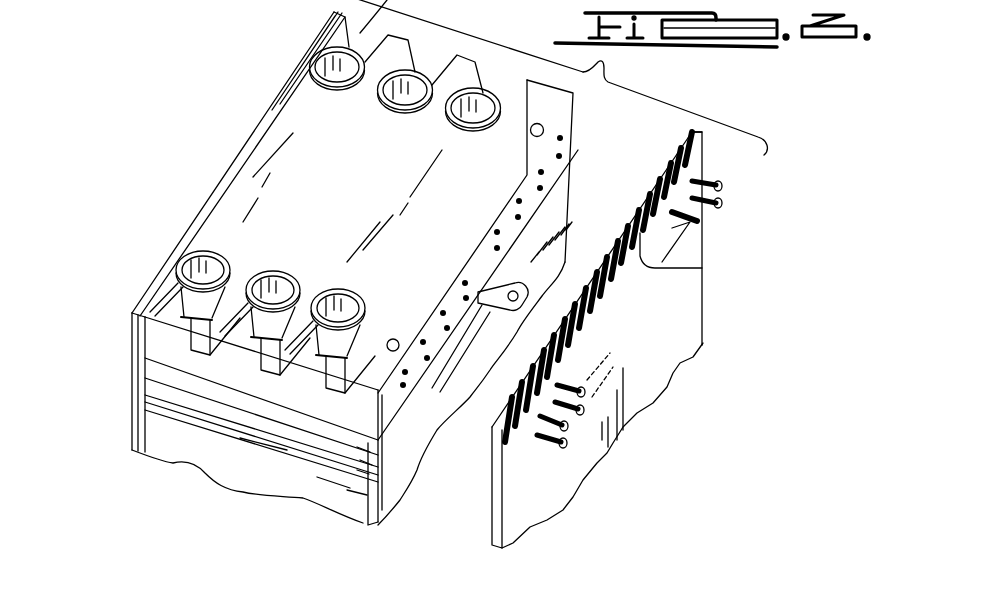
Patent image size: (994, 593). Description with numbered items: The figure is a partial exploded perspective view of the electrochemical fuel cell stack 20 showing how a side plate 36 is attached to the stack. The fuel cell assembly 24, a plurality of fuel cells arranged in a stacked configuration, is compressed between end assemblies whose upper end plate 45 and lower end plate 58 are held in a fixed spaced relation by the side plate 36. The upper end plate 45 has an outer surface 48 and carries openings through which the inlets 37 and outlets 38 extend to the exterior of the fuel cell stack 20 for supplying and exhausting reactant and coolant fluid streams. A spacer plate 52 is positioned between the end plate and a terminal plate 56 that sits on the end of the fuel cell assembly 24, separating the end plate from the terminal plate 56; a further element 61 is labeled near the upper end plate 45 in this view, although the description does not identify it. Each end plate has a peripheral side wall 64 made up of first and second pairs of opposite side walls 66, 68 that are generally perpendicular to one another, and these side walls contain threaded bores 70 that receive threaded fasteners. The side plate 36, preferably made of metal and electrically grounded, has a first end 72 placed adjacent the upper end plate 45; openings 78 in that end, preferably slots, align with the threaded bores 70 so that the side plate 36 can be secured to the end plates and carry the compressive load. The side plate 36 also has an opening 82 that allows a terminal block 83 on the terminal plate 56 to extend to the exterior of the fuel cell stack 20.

The electrochemical fuel cell stack 20 is at (197, 157).
The fuel cell assembly 24 is at (200, 443).
The side plate 36 is at (212, 197).
The inlets 37 is at (160, 255).
The outlets 38 is at (290, 63).
The upper end plate 45 is at (382, 197).
The outer surface 48 is at (290, 120).
The spacer plate 52 is at (202, 392).
The terminal plate 56 is at (282, 440).
The lower end plate 58 is at (176, 13).
The notch 61 is at (234, 12).
The peripheral side wall 64 is at (390, 403).
The first pair of opposite side walls 66 is at (570, 125).
The second pair of opposite side walls 68 is at (473, 58).
The threaded bores 70 is at (540, 168).
The first end 72 is at (700, 155).
The openings 78 is at (702, 268).
The openings 82 is at (607, 323).
The terminal block 83 is at (503, 287).